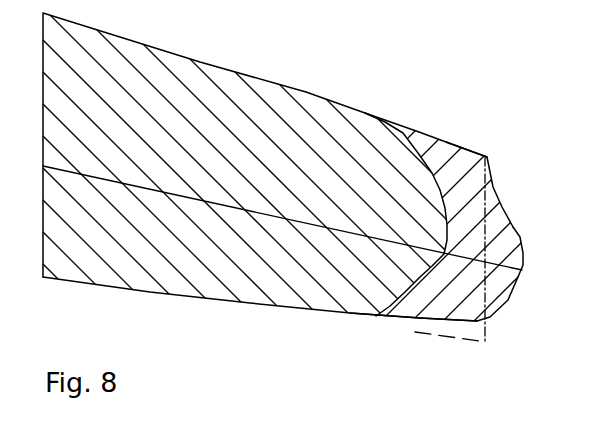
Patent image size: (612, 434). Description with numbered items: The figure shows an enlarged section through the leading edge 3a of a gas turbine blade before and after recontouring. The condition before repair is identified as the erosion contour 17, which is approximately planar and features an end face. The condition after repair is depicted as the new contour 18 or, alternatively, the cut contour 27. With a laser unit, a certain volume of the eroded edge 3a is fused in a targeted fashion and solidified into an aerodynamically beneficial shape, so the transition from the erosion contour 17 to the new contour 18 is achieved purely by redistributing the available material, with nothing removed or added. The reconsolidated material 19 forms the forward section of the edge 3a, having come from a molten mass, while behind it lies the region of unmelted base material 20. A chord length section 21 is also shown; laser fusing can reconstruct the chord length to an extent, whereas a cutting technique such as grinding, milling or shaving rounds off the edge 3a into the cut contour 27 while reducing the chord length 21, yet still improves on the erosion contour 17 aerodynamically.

The edge 3a is at (329, 210).
The erosion contour 17 is at (478, 150).
The new contour 18 is at (520, 235).
The reconsolidated material 19 is at (507, 303).
The unmelted base material 20 is at (383, 233).
The chord length section 21 is at (228, 208).
The cut contour 27 is at (435, 176).